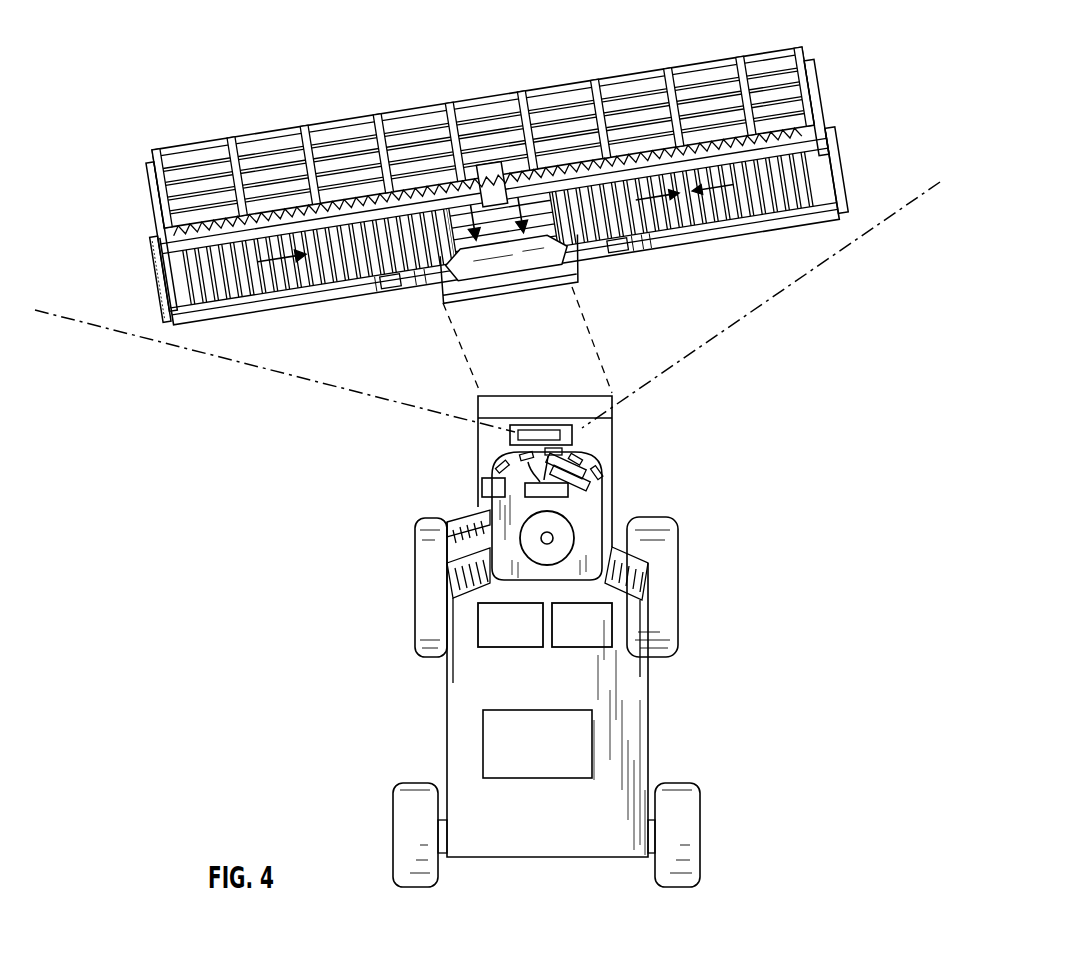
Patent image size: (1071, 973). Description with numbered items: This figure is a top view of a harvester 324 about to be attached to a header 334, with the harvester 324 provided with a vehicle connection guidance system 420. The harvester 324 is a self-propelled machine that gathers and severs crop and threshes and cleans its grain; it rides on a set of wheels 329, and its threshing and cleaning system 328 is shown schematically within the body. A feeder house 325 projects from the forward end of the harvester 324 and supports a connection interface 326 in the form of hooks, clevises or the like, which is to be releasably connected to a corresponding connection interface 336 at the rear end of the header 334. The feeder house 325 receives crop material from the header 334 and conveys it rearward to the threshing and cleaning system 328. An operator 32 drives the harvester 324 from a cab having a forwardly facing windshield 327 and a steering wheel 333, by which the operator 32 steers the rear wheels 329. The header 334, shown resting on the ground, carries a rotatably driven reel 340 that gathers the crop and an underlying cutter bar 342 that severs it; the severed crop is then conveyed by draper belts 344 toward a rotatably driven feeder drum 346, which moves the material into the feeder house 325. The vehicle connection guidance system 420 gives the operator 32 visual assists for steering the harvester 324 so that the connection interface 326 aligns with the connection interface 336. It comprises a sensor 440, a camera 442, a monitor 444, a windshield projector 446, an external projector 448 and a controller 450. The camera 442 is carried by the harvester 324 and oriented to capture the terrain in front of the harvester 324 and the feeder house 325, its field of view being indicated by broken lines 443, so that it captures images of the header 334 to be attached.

The operator 32 is at (575, 535).
The harvester 324 is at (410, 578).
The feeder house 325 is at (490, 543).
The connection interface 326 is at (535, 396).
The windshield 327 is at (478, 432).
The threshing and cleaning system 328 is at (592, 745).
The wheels 329 is at (543, 702).
The steering wheel 333 is at (568, 490).
The header 334 is at (144, 268).
The connection interface 336 is at (480, 295).
The reel 340 is at (643, 75).
The cutter bar 342 is at (788, 128).
The draper belts 344 is at (535, 205).
The feeder drum 346 is at (538, 252).
The vehicle connection guidance system 420 is at (618, 662).
The sensor 440 is at (490, 648).
The camera 442 is at (507, 464).
The broken lines 443 is at (87, 330).
The monitor 444 is at (598, 462).
The windshield projector 446 is at (482, 487).
The external projector 448 is at (525, 428).
The controller 450 is at (567, 648).